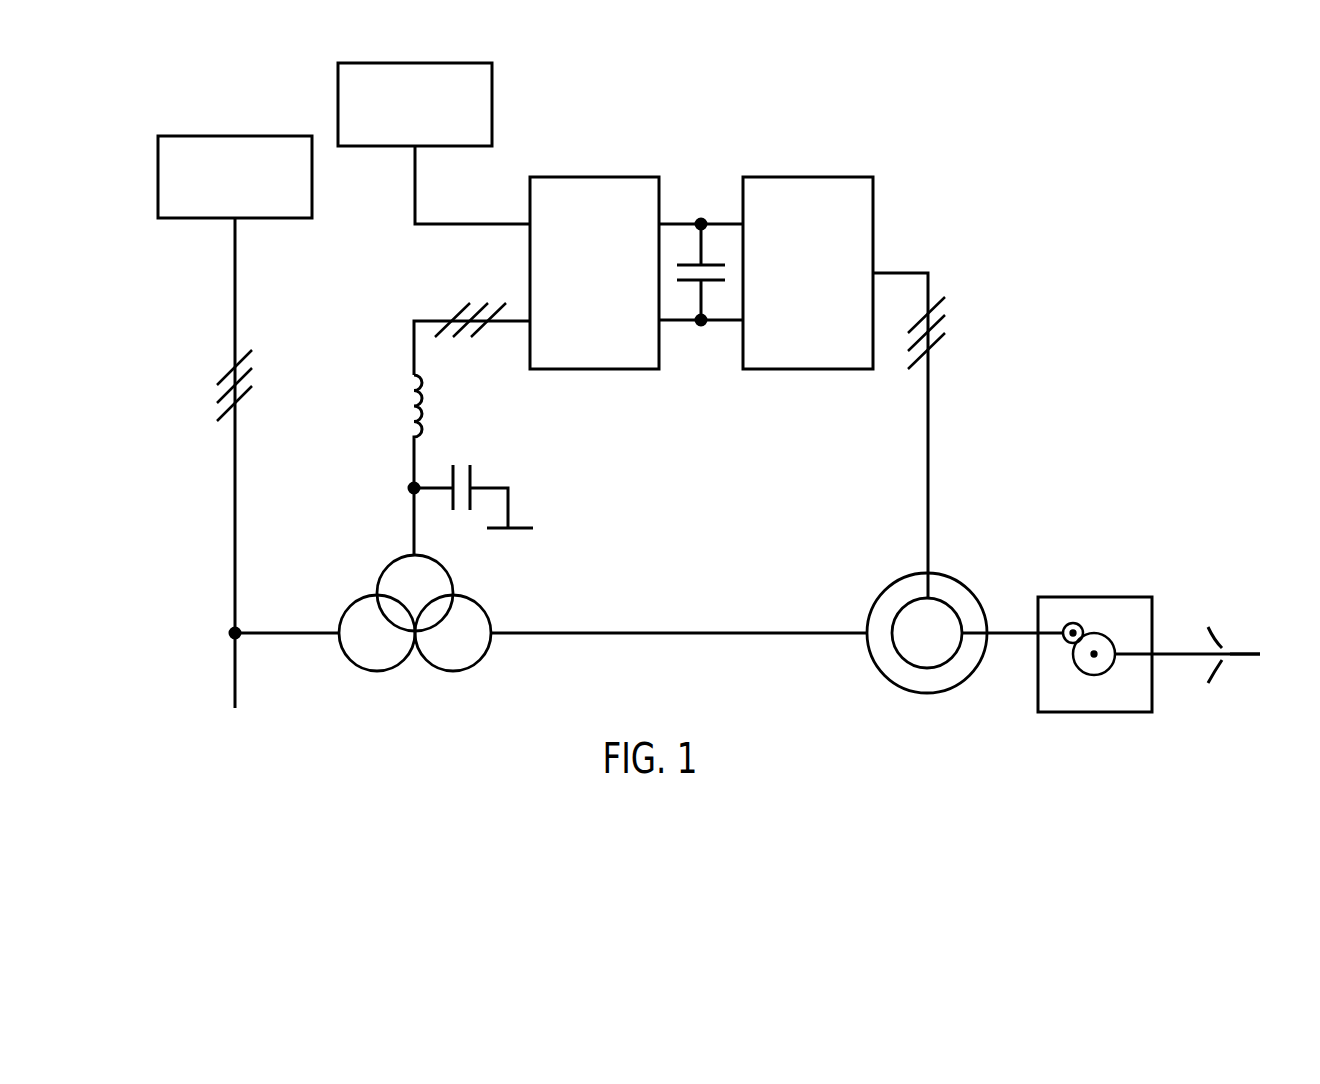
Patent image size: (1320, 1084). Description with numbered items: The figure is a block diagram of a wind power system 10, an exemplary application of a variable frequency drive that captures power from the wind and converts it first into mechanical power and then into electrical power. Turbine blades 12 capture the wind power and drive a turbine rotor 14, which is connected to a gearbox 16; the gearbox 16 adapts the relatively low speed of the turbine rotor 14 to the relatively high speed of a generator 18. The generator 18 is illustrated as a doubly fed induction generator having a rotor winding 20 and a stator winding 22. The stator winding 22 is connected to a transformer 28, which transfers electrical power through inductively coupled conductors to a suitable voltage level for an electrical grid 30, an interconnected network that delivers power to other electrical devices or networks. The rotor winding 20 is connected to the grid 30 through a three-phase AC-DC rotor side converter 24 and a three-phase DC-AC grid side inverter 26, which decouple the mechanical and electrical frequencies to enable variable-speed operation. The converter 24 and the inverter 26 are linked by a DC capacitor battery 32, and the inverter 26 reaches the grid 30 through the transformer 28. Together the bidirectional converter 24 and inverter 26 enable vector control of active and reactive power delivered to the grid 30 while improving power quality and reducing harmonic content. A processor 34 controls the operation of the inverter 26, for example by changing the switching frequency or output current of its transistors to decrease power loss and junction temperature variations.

The wind power system 10 is at (941, 164).
The turbine blades 12 is at (1240, 657).
The turbine rotor 14 is at (1177, 652).
The gearbox 16 is at (1095, 596).
The generator 18 is at (925, 625).
The rotor winding 20 is at (960, 648).
The stator winding 22 is at (868, 654).
The rotor side converter 24 is at (808, 175).
The grid side inverter 26 is at (595, 175).
The transformer 28 is at (417, 686).
The electrical grid 30 is at (235, 135).
The DC capacitor battery 32 is at (692, 283).
The processor 34 is at (415, 62).